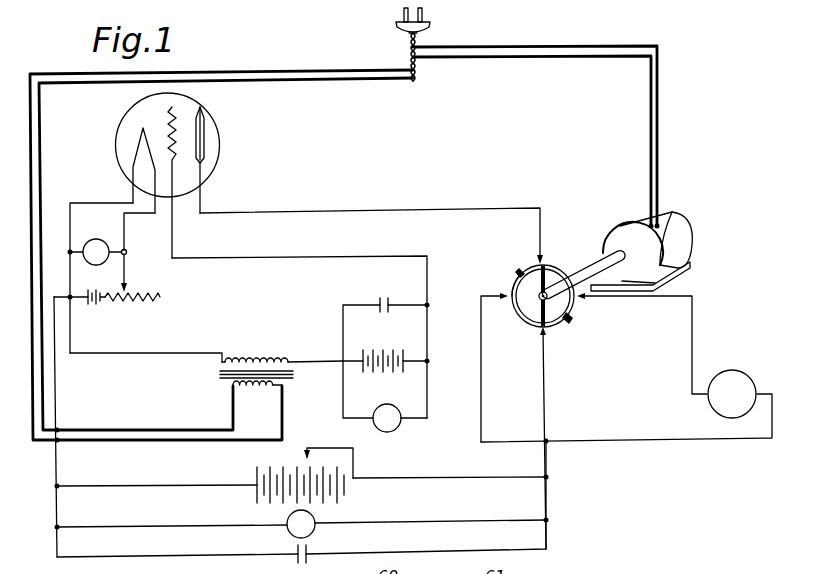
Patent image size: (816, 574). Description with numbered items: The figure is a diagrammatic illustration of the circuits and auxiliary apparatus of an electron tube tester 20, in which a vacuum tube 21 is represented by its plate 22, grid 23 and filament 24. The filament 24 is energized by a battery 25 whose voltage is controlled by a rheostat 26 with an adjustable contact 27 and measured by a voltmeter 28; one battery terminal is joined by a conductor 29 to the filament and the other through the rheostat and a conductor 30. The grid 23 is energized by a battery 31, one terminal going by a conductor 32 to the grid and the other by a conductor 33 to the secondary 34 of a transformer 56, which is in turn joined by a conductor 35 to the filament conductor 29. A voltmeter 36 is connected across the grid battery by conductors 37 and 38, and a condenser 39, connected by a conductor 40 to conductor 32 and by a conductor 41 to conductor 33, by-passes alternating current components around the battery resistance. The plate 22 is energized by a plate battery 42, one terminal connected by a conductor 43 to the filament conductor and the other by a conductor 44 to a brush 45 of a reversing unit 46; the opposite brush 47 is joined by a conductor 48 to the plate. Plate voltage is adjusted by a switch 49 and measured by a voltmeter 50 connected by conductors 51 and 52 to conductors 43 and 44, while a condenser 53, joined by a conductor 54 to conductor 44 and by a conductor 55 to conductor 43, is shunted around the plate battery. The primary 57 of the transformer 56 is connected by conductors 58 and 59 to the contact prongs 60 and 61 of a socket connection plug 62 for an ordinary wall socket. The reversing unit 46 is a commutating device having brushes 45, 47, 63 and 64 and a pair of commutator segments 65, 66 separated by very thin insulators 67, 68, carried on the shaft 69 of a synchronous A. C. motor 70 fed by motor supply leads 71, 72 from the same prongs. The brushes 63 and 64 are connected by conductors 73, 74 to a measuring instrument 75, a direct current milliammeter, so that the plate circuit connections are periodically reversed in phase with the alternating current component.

The tester 20 is at (296, 205).
The vacuum tube 21 is at (213, 137).
The plate 22 is at (200, 117).
The grid 23 is at (168, 108).
The filament 24 is at (138, 143).
The battery 25 is at (87, 312).
The rheostat 26 is at (133, 300).
The adjustable contact 27 is at (128, 280).
The voltmeter 28 is at (95, 240).
The conductor 29 is at (68, 223).
The conductor 30 is at (127, 236).
The battery 31 is at (397, 353).
The conductor 32 is at (350, 258).
The conductor 33 is at (327, 348).
The secondary 34 is at (257, 360).
The conductor 35 is at (173, 353).
The voltmeter 36 is at (394, 431).
The conductor 37 is at (345, 390).
The conductor 38 is at (432, 391).
The condenser 39 is at (381, 301).
The conductor 40 is at (410, 305).
The conductor 41 is at (343, 315).
The plate battery 42 is at (280, 470).
The conductor 43 is at (57, 397).
The conductor 44 is at (513, 477).
The brush 45 is at (547, 337).
The reversing unit 46 is at (590, 254).
The brush 47 is at (546, 255).
The conductor 48 is at (427, 210).
The switch 49 is at (343, 460).
The voltmeter 50 is at (313, 533).
The conductor 51 is at (180, 527).
The conductor 52 is at (463, 520).
The condenser 53 is at (302, 558).
The conductor 54 is at (430, 551).
The conductor 55 is at (188, 557).
The transformer 56 is at (233, 383).
The primary 57 is at (255, 389).
The conductor 58 is at (137, 427).
The conductor 59 is at (178, 436).
The contact prong 60 is at (396, 24).
The contact prong 61 is at (430, 14).
The socket connection plug 62 is at (423, 32).
The brush 63 is at (505, 291).
The brush 64 is at (583, 301).
The commutator segment 65 is at (522, 268).
The commutator segment 66 is at (520, 323).
The insulator 67 is at (518, 298).
The insulator 68 is at (570, 317).
The shaft 69 is at (612, 264).
The synchronous A. C. motor 70 is at (667, 237).
The motor supply lead 71 is at (653, 152).
The motor supply lead 72 is at (662, 107).
The conductor 73 is at (620, 439).
The conductor 74 is at (692, 342).
The measuring instrument 75 is at (743, 377).